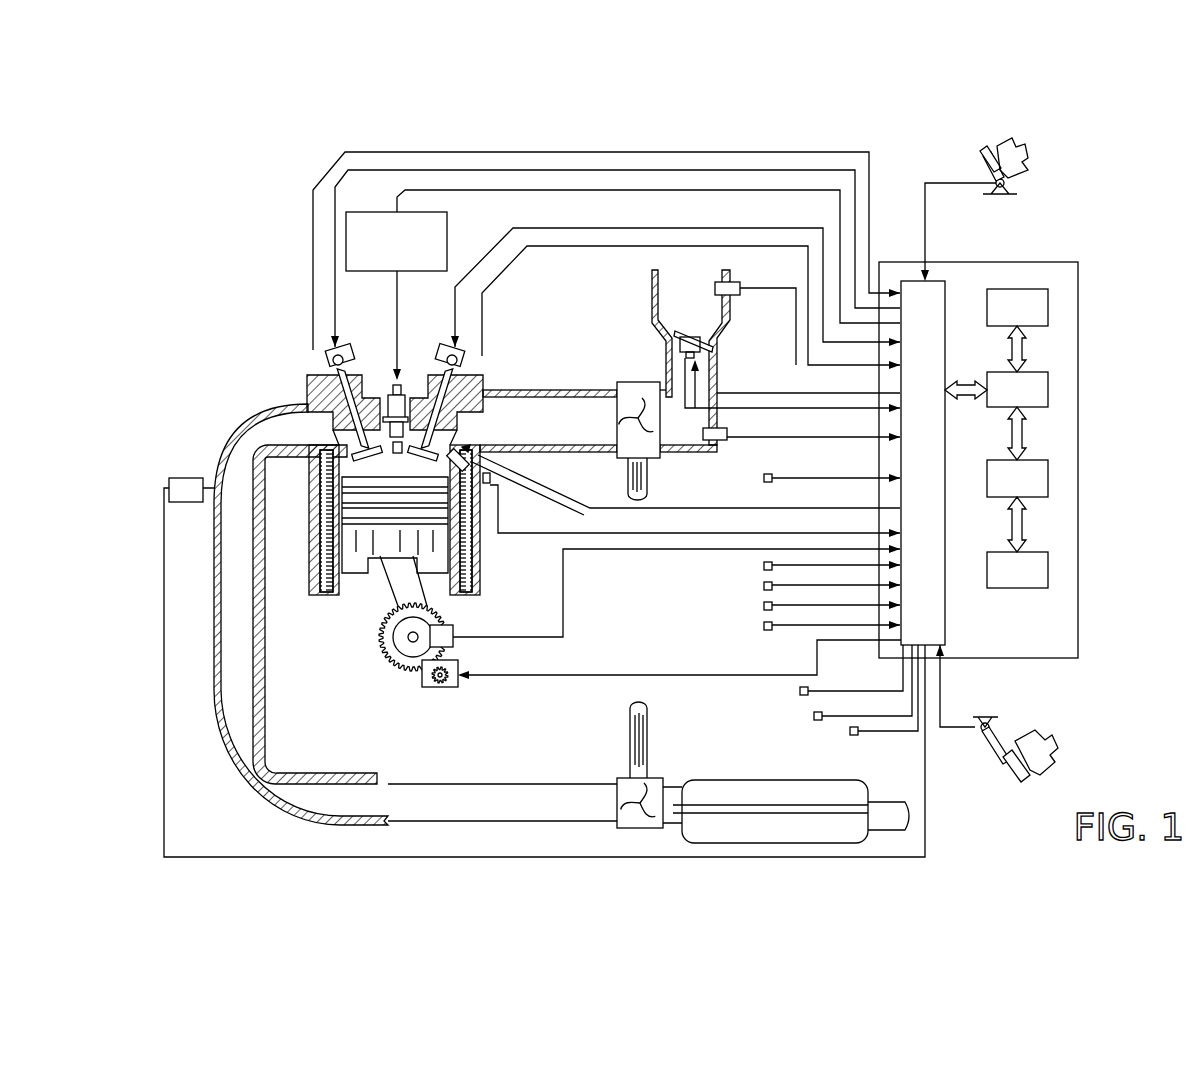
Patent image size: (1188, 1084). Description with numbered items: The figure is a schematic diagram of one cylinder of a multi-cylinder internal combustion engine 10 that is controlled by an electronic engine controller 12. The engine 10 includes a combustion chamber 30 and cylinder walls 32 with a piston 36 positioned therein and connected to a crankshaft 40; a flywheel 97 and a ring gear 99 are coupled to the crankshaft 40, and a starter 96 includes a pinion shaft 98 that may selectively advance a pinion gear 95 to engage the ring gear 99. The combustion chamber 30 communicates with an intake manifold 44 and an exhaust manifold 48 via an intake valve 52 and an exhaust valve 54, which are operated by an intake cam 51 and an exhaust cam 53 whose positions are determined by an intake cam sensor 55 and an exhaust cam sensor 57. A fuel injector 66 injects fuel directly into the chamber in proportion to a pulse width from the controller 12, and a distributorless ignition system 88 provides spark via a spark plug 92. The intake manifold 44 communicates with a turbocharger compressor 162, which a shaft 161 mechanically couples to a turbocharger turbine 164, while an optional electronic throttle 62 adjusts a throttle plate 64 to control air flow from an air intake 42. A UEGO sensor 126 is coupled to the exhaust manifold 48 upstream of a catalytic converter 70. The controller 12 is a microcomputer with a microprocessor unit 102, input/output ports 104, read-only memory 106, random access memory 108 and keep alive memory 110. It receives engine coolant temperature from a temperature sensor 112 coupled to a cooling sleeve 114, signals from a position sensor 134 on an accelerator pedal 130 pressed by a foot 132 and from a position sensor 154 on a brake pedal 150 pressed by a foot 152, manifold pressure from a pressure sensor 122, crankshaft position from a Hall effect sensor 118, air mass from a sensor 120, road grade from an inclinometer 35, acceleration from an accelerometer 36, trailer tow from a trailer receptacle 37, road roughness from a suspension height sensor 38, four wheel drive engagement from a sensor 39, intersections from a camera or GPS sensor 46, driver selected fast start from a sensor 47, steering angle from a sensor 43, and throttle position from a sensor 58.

The internal combustion engine 10 is at (246, 330).
The electronic engine controller 12 is at (1068, 262).
The combustion chamber 30 is at (396, 461).
The cylinder walls 32 is at (347, 594).
The inclinometer 35 is at (764, 482).
The piston 36 is at (382, 575).
The trailer receptacle 37 is at (764, 591).
The suspension height sensor 38 is at (764, 611).
The four wheel drive sensor 39 is at (764, 631).
The crankshaft 40 is at (403, 655).
The air intake 42 is at (701, 313).
The steering angle sensor 43 is at (800, 696).
The intake manifold 44 is at (561, 432).
The camera or GPS sensor 46 is at (814, 721).
The driver selected fast start sensor 47 is at (850, 736).
The exhaust manifold 48 is at (291, 438).
The intake cam 51 is at (447, 349).
The intake valve 52 is at (438, 431).
The exhaust cam 53 is at (343, 349).
The exhaust valve 54 is at (330, 430).
The intake cam sensor 55 is at (461, 360).
The exhaust cam sensor 57 is at (328, 358).
The throttle position sensor 58 is at (680, 357).
The electronic throttle 62 is at (712, 346).
The throttle plate 64 is at (680, 343).
The fuel injector 66 is at (515, 481).
The catalytic converter 70 is at (713, 780).
The distributorless ignition system 88 is at (355, 212).
The spark plug 92 is at (406, 382).
The pinion gear 95 is at (446, 686).
The starter 96 is at (455, 687).
The flywheel 97 is at (393, 636).
The pinion shaft 98 is at (437, 686).
The ring gear 99 is at (418, 670).
The microprocessor unit 102 is at (1052, 385).
The input/output ports 104 is at (947, 287).
The read-only memory 106 is at (1052, 300).
The random access memory 108 is at (1052, 474).
The keep alive memory 110 is at (1052, 564).
The temperature sensor 112 is at (496, 487).
The cooling sleeve 114 is at (470, 550).
The Hall effect sensor 118 is at (457, 625).
The air mass sensor 120 is at (738, 282).
The pressure sensor 122 is at (727, 440).
The Universal Exhaust Gas Oxygen sensor 126 is at (169, 481).
The accelerator pedal 130 is at (980, 160).
The foot 132 is at (1028, 152).
The position sensor 134 is at (1006, 186).
The brake pedal 150 is at (1003, 768).
The foot 152 is at (1022, 745).
The position sensor 154 is at (978, 724).
The shaft 161 is at (647, 750).
The turbocharger compressor 162 is at (617, 384).
The turbocharger turbine 164 is at (617, 778).